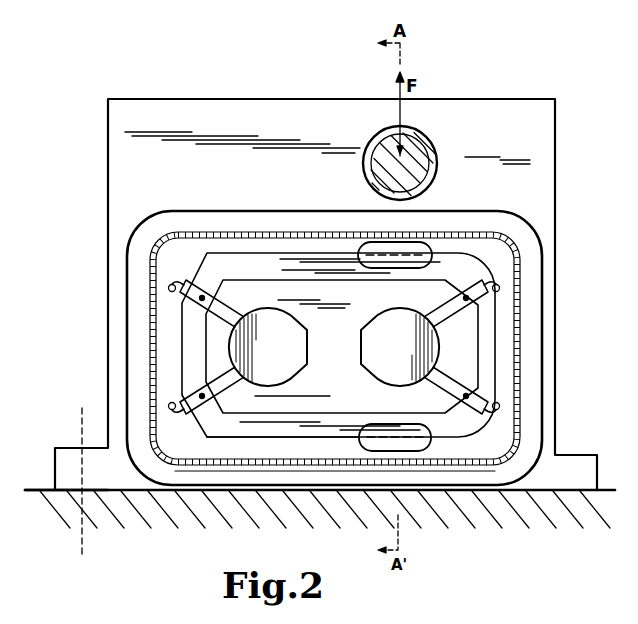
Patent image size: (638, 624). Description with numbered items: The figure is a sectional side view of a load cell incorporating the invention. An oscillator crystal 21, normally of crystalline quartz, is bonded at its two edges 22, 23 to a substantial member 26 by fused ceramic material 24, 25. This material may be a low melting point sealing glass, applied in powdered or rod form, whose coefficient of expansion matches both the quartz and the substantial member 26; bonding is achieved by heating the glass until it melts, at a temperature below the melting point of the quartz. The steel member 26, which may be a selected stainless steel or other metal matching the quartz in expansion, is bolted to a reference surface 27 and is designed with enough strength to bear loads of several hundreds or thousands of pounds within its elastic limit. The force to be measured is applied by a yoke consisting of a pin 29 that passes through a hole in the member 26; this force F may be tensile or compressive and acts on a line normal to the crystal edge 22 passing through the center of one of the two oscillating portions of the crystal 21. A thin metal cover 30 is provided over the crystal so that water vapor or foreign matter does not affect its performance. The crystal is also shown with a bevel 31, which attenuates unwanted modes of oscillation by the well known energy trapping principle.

The crystal 21 is at (470, 278).
The crystal edge 22 is at (327, 252).
The crystal edge 23 is at (236, 437).
The fused ceramic material 24 is at (433, 247).
The fused ceramic material 25 is at (431, 446).
The substantial member 26 is at (556, 157).
The reference surface 27 is at (52, 488).
The pin 29 is at (388, 146).
The thin metal cover 30 is at (520, 341).
The bevel 31 is at (471, 410).